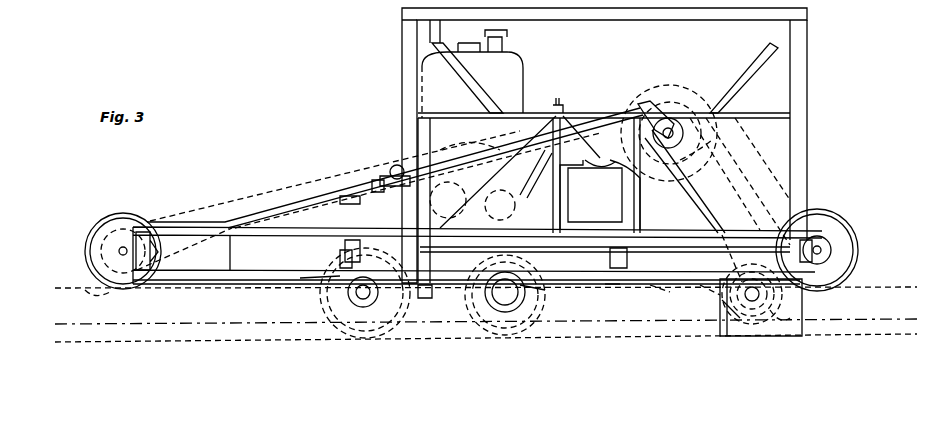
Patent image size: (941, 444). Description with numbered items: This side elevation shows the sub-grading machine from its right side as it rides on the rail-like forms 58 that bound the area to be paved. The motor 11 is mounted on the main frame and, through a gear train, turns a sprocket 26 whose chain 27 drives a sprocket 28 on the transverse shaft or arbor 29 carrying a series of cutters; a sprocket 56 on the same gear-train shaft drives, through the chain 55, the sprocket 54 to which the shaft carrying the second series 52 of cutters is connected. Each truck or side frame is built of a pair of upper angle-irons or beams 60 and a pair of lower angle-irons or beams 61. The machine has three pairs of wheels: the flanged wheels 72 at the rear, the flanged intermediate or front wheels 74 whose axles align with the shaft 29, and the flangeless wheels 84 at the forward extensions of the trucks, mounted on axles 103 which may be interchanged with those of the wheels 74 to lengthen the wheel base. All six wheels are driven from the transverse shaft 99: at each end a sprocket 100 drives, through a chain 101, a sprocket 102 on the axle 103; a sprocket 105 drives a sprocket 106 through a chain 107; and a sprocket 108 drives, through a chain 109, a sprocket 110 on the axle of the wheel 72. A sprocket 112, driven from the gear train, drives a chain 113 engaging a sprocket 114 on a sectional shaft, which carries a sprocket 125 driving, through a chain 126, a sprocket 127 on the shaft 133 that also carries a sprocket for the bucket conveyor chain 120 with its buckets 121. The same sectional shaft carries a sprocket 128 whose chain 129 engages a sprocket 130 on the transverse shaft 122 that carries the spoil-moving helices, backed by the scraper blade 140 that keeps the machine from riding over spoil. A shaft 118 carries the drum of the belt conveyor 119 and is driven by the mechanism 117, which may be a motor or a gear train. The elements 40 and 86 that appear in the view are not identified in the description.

The motor 11 is at (472, 74).
The sprocket 26 is at (472, 150).
The chain 27 is at (449, 182).
The sprocket 28 is at (350, 296).
The shaft or arbor 29 is at (300, 280).
The bracket 40 is at (428, 296).
The second series of cutters 52 is at (546, 291).
The sprocket 54 is at (540, 316).
The chain 55 is at (477, 302).
The sprocket 56 is at (500, 196).
The forms 58 is at (96, 301).
The upper angle-irons or beams 60 is at (209, 232).
The lower angle-irons or beams 61 is at (242, 271).
The wheels 72 is at (842, 233).
The intermediate wheels 74 is at (335, 194).
The flangeless wheel 84 is at (115, 222).
The wheel 86 is at (348, 332).
The shaft 99 is at (395, 170).
The sprocket 100 is at (397, 162).
The chain 101 is at (278, 195).
The sprocket 102 is at (102, 240).
The axle 103 is at (119, 250).
The sprocket 105 is at (378, 170).
The sprocket 106 is at (340, 244).
The chain 107 is at (352, 200).
The sprocket 108 is at (338, 256).
The chain 109 is at (595, 258).
The sprocket 110 is at (833, 250).
The sprocket 112 is at (508, 206).
The chain 113 is at (595, 195).
The sprocket 114 is at (613, 286).
The mechanism 117 is at (672, 215).
The shaft 118 is at (626, 172).
The belt conveyor 119 is at (575, 189).
The bucket conveyor chain 120 is at (722, 173).
The buckets 121 is at (740, 149).
The shaft 122 is at (752, 302).
The sprocket 125 is at (663, 300).
The chain 126 is at (680, 167).
The sprocket 127 is at (667, 118).
The sprocket 128 is at (701, 300).
The chain 129 is at (722, 310).
The sprocket 130 is at (762, 296).
The shaft 133 is at (672, 130).
The scraper blade 140 is at (780, 325).